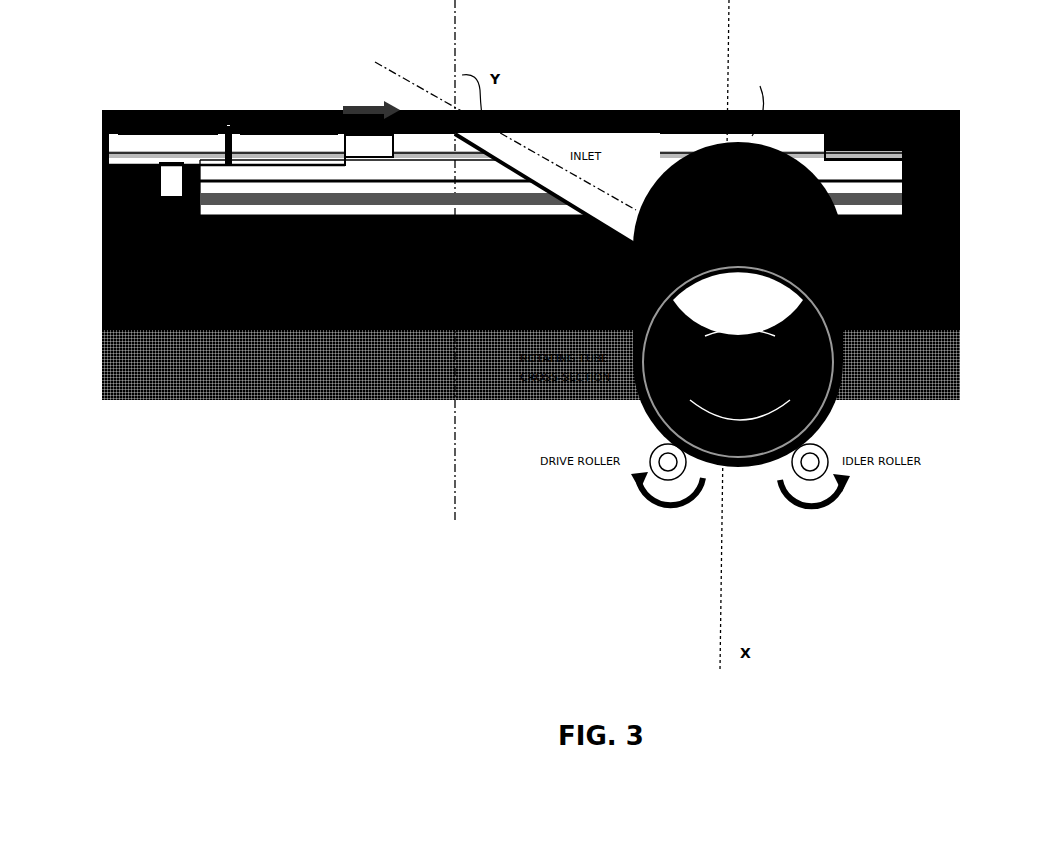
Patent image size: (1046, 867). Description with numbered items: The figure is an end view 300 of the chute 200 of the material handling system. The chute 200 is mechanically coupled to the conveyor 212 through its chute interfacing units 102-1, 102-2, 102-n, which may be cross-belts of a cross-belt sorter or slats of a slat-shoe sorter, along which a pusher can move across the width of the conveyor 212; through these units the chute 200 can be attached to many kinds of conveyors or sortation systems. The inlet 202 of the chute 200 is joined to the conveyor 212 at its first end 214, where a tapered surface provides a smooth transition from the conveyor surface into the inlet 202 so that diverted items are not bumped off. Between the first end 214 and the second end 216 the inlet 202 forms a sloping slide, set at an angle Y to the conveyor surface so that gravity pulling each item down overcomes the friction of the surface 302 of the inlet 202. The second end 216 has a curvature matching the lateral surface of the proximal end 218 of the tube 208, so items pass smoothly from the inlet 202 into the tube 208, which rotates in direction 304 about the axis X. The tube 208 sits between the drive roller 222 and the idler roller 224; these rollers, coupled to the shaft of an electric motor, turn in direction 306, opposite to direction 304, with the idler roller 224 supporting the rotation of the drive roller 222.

The end view 300 is at (100, 68).
The chute interfacing unit 102-1 is at (167, 136).
The chute interfacing unit 102-2 is at (286, 136).
The chute interfacing unit 102-n is at (864, 133).
The chute 200 is at (680, 110).
The conveyor 212 is at (531, 111).
The first end of the inlet 214 is at (748, 98).
The inlet 202 is at (728, 143).
The surface of the inlet 302 is at (625, 195).
The tube 208 is at (761, 252).
The second end of the inlet 216 is at (729, 347).
The proximal end of the tube 218 is at (740, 384).
The direction of rotation of the tube 304 is at (738, 362).
The drive roller 222 is at (648, 470).
The idler roller 224 is at (828, 450).
The direction of rotation of the rollers 306 is at (740, 505).